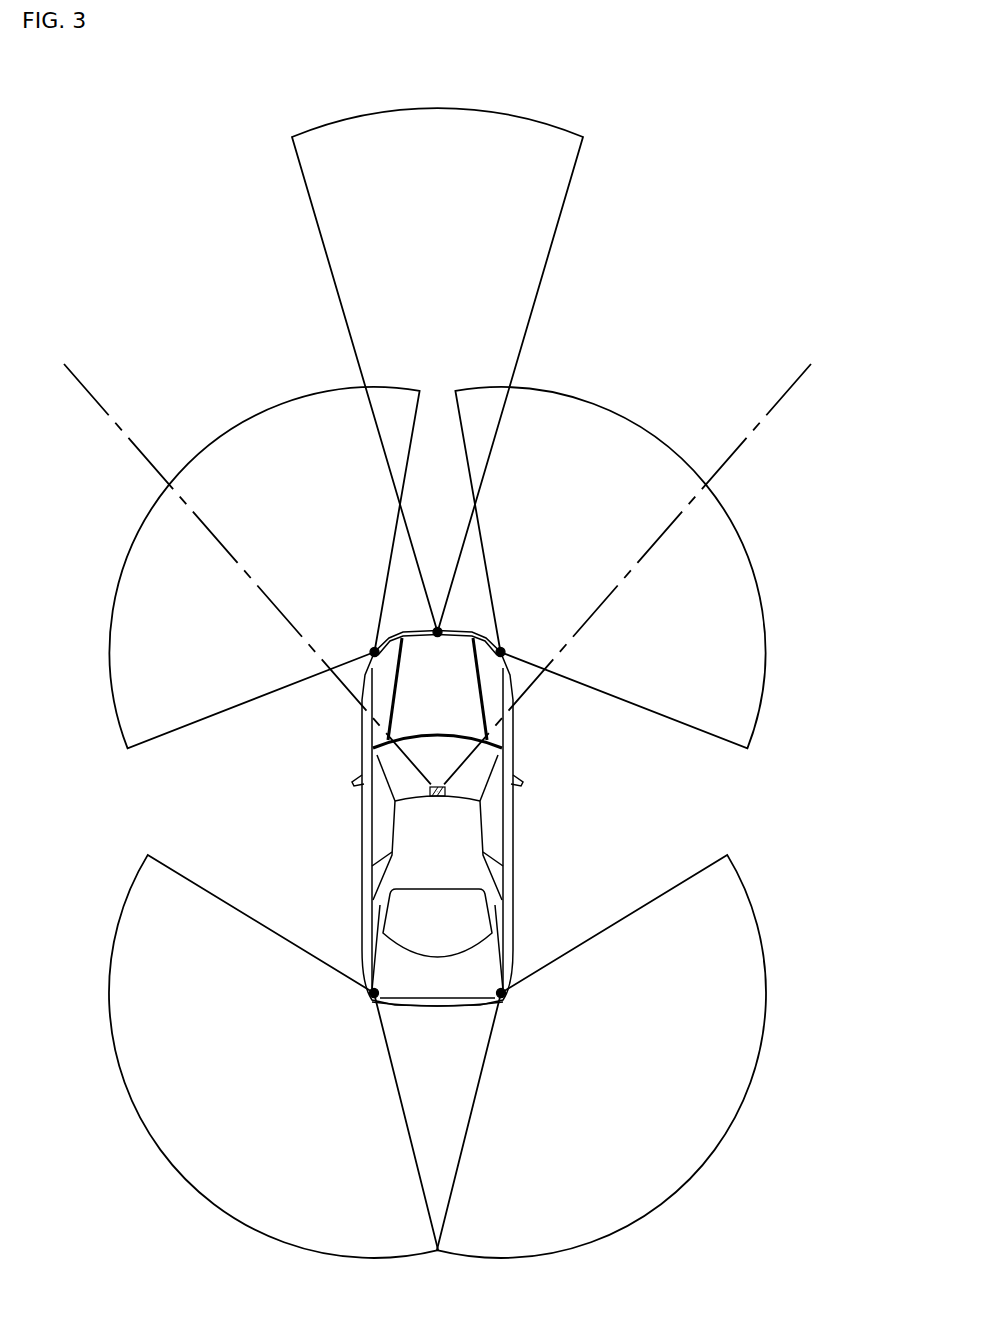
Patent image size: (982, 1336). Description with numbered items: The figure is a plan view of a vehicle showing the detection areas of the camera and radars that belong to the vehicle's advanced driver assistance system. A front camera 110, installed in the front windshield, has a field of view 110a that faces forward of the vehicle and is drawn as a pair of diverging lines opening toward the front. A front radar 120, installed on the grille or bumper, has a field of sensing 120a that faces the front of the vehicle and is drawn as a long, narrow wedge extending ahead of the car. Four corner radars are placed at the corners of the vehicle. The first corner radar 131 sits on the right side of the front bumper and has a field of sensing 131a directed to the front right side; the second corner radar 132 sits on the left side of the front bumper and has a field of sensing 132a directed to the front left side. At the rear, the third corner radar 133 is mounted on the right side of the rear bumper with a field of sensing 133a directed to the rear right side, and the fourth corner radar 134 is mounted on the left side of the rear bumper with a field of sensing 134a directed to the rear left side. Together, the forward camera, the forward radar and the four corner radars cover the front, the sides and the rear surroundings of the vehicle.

The front camera 110 is at (446, 792).
The field of view 110a is at (768, 415).
The front radar 120 is at (439, 629).
The field of sensing 120a is at (525, 251).
The first corner radar 131 is at (502, 651).
The field of sensing 131a is at (637, 443).
The second corner radar 132 is at (373, 651).
The field of sensing 132a is at (236, 443).
The third corner radar 133 is at (504, 996).
The field of sensing 133a is at (713, 1133).
The fourth corner radar 134 is at (371, 996).
The field of sensing 134a is at (162, 1133).